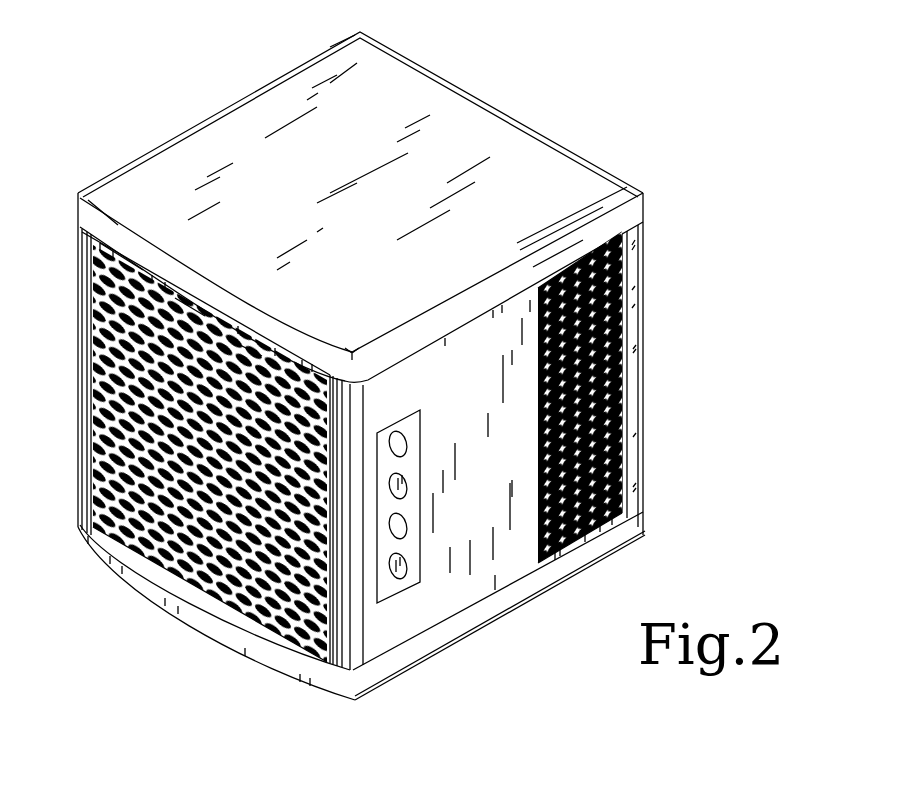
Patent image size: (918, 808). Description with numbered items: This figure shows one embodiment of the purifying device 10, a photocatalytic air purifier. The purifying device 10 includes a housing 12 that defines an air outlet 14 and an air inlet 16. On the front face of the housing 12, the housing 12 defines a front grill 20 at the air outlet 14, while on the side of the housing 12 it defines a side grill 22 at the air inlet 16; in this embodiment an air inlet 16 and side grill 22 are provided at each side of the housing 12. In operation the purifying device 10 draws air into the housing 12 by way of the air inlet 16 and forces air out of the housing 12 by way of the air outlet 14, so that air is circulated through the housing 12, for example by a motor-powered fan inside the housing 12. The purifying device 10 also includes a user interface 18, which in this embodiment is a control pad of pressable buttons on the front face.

The purifying device 10 is at (686, 108).
The housing 12 is at (193, 151).
The air outlet 14 is at (120, 556).
The air inlet 16 is at (622, 445).
The user interface 18 is at (410, 545).
The front grill 20 is at (100, 372).
The side grill 22 is at (622, 343).